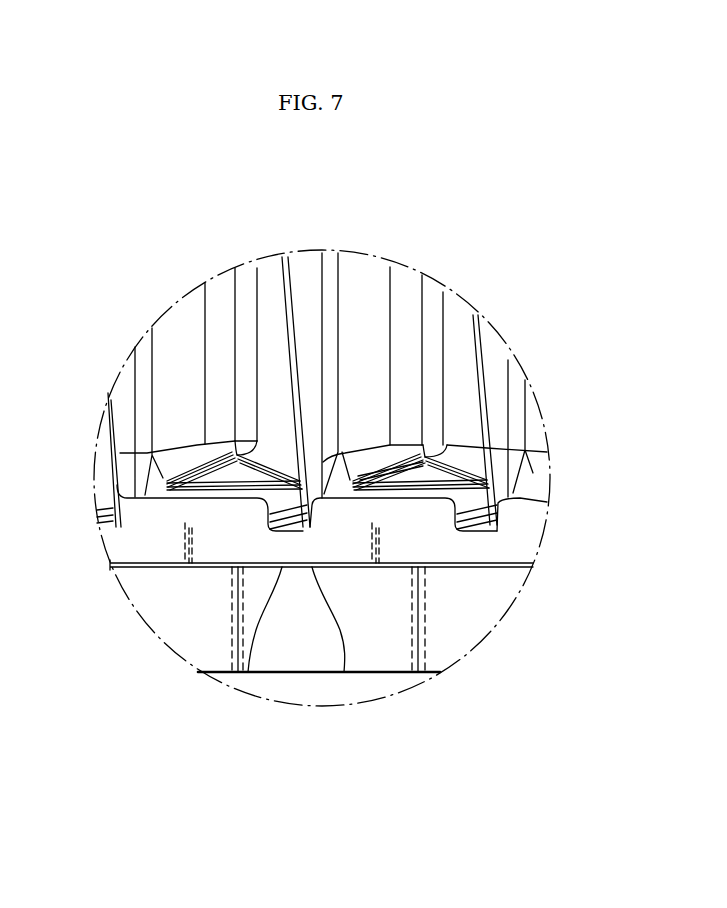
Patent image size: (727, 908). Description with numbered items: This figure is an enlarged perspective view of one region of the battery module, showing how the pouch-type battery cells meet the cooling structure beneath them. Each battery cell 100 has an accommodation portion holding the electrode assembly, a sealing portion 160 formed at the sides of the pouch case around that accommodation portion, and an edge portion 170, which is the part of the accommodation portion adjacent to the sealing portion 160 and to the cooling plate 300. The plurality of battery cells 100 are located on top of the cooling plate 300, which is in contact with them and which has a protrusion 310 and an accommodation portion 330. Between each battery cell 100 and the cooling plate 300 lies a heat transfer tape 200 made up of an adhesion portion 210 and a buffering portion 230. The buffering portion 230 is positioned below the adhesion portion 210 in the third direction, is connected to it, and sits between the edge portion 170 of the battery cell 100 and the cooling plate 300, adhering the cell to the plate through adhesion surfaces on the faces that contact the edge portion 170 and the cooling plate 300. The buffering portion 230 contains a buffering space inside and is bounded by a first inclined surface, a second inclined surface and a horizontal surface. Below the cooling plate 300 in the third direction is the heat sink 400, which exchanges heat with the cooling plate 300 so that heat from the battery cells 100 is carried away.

The battery cell 100 is at (191, 308).
The heat transfer tape 200 is at (428, 272).
The adhesion portion 210 is at (443, 317).
The edge portion 170 is at (405, 453).
The buffering portion 230 is at (438, 483).
The protrusion 310 is at (143, 512).
The cooling plate 300 is at (93, 545).
The heat sink 400 is at (132, 622).
The accommodation portion 330 is at (247, 668).
The sealing portion 160 is at (344, 672).